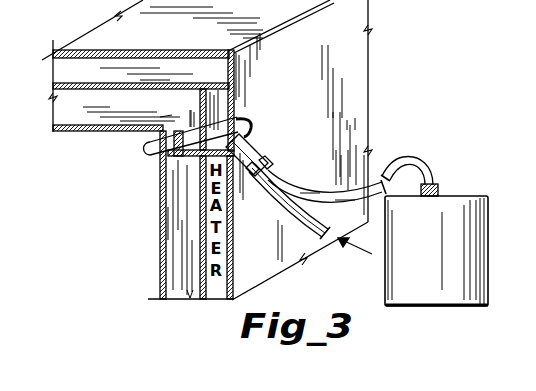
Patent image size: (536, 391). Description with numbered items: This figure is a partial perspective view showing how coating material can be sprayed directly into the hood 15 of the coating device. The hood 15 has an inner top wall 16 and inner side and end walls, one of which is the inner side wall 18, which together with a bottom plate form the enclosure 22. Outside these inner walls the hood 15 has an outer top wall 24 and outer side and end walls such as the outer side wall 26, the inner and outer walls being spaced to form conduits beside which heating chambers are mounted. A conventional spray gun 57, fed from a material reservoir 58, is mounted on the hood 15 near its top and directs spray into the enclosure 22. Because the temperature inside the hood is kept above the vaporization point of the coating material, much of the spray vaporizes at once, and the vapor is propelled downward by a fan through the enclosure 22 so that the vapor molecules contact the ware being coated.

The hood 15 is at (352, 114).
The inner top wall 16 is at (83, 132).
The inner side wall 18 is at (158, 220).
The enclosure 22 is at (121, 194).
The outer top wall 24 is at (106, 84).
The outer side wall 26 is at (200, 264).
The spray gun 57 is at (244, 126).
The material reservoir 58 is at (457, 211).